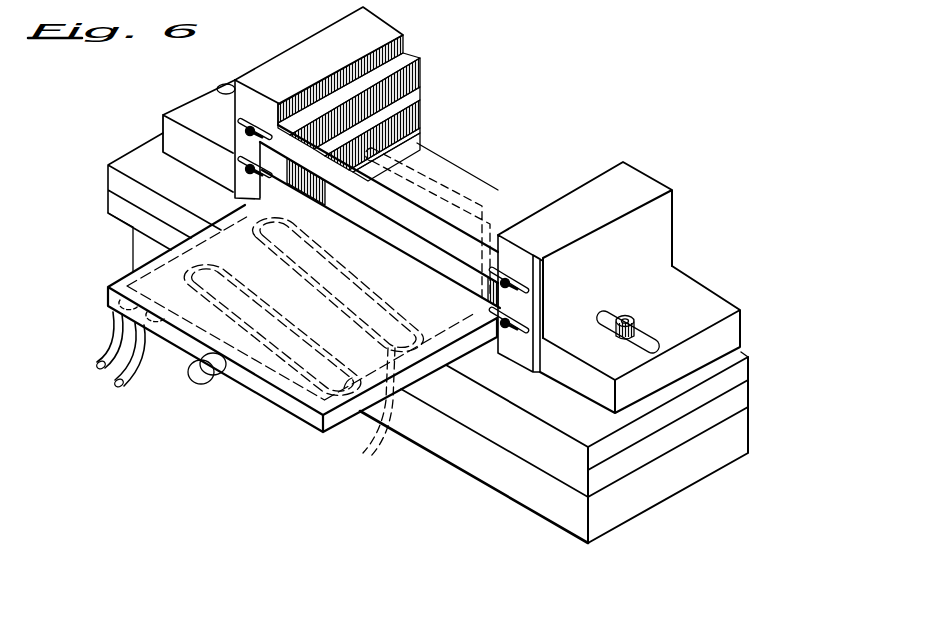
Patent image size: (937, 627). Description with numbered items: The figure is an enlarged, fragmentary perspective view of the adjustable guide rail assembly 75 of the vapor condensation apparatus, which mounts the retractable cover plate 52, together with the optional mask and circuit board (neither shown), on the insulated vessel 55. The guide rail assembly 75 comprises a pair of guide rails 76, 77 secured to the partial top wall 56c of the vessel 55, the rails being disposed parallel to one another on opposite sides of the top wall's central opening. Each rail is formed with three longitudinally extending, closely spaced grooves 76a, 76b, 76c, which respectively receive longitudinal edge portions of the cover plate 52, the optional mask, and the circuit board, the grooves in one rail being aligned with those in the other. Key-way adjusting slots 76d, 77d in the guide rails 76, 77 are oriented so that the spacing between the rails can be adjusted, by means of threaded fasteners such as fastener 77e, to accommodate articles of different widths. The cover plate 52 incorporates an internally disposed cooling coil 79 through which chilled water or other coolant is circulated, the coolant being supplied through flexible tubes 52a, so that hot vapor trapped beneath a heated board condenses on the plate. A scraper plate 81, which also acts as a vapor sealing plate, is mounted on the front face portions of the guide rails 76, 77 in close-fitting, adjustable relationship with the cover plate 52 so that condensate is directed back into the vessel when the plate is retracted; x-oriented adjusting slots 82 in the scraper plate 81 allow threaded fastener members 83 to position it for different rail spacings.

The retractable cover plate 52 is at (238, 378).
The flexible tubes 52a is at (118, 381).
The insulated vessel 55 is at (674, 497).
The partial top wall 56c is at (720, 404).
The guide rail assembly 75 is at (678, 256).
The guide rail 76 is at (395, 33).
The groove 76a is at (413, 147).
The groove 76b is at (403, 107).
The upper groove 76c is at (400, 67).
The key-way adjusting slots 76d is at (232, 90).
The guide rail 77 is at (650, 182).
The key-way adjusting slots 77d is at (604, 320).
The threaded fastener 77e is at (637, 319).
The cooling coil 79 is at (369, 411).
The scraper plate 81 is at (418, 210).
The adjusting slots 82 is at (253, 128).
The threaded fastener members 83 is at (250, 168).